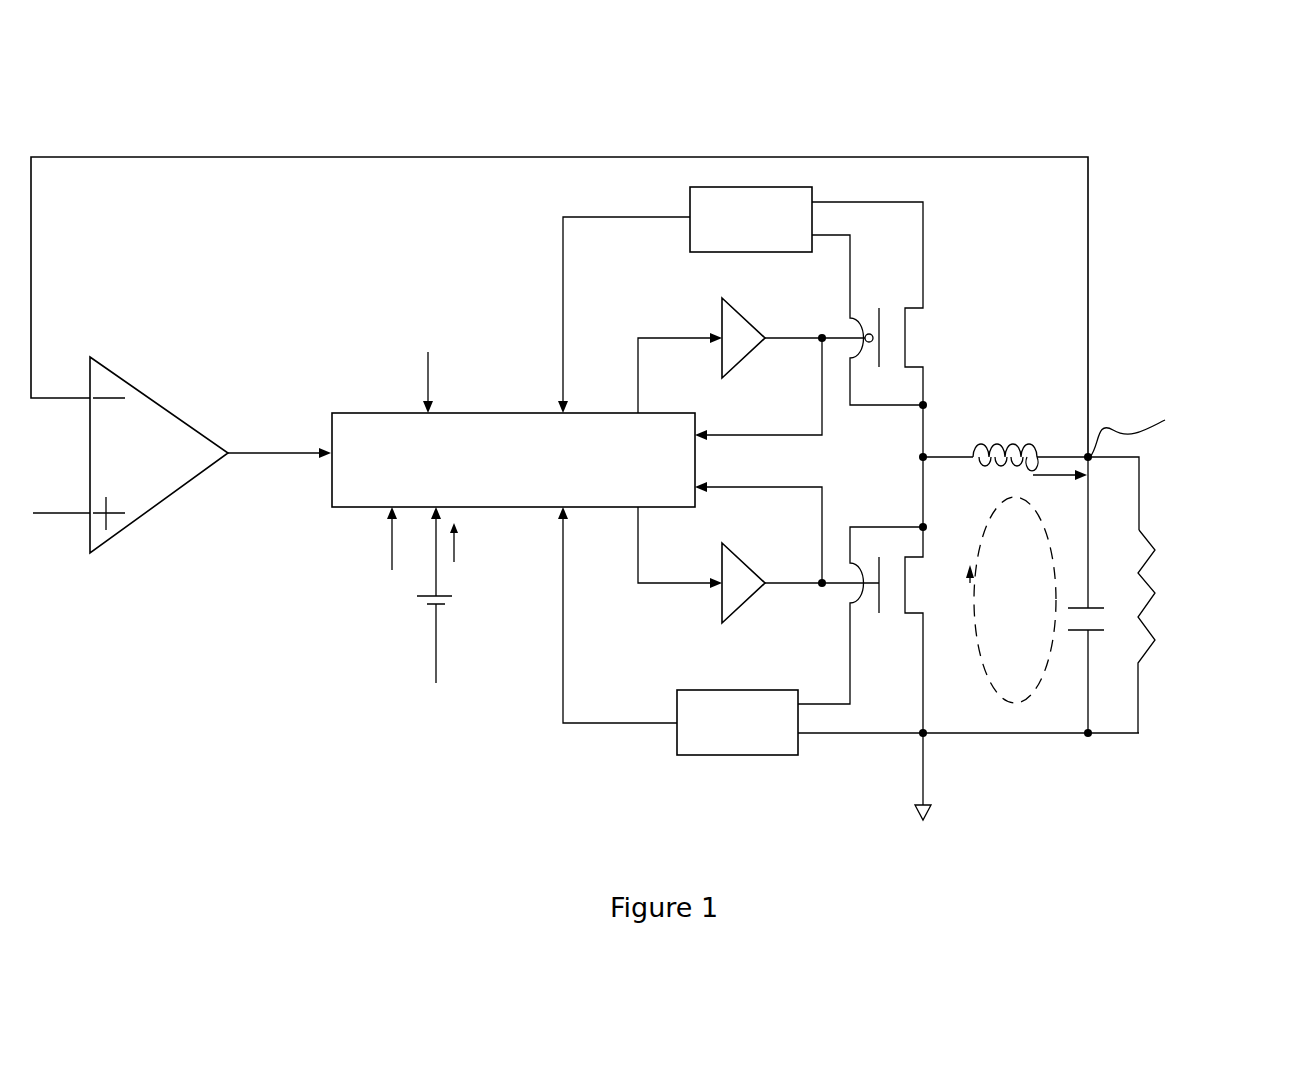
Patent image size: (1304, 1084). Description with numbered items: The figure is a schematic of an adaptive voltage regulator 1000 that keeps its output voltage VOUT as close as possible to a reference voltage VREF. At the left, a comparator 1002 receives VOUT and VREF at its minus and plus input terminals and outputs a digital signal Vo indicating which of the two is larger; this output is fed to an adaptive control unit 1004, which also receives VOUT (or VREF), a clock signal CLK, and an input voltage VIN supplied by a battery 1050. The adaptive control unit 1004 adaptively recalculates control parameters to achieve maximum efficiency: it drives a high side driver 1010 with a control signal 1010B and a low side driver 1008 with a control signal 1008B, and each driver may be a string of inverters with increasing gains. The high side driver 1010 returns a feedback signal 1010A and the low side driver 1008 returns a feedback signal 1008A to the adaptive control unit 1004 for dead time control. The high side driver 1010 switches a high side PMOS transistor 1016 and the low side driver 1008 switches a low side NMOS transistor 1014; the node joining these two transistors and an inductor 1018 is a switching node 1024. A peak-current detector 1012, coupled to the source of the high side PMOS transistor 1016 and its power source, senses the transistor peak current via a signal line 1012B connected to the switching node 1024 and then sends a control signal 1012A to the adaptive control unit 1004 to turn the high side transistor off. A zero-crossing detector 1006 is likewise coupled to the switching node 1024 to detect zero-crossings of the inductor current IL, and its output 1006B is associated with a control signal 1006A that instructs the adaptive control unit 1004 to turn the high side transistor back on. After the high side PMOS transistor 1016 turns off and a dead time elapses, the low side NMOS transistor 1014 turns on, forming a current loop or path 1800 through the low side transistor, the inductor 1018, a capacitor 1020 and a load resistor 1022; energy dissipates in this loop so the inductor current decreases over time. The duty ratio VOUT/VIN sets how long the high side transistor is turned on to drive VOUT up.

The adaptive voltage regulator 1000 is at (1180, 163).
The comparator 1002 is at (160, 397).
The adaptive control unit 1004 is at (330, 487).
The zero-crossing detector (ZCD) 1006 is at (677, 735).
The control signal 1006A is at (607, 629).
The ZCD output line 1006B is at (862, 599).
The low side driver 1008 is at (717, 595).
The feedback signal 1008A is at (758, 532).
The control signal 1008B is at (680, 547).
The high side driver 1010 is at (720, 323).
The feedback signal 1010A is at (758, 389).
The control signal 1010B is at (680, 373).
The peak-current detector (PCD) 1012 is at (742, 187).
The control signal 1012A is at (624, 299).
The signal line 1012B is at (869, 336).
The low side NMOS transistor 1014 is at (893, 587).
The high side PMOS transistor 1016 is at (922, 322).
The inductor 1018 is at (1028, 442).
The capacitor 1020 is at (1105, 643).
The load resistor 1022 is at (1153, 583).
The switching node 1024 is at (930, 448).
The battery 1050 is at (450, 603).
The current loop or path 1800 is at (1033, 700).